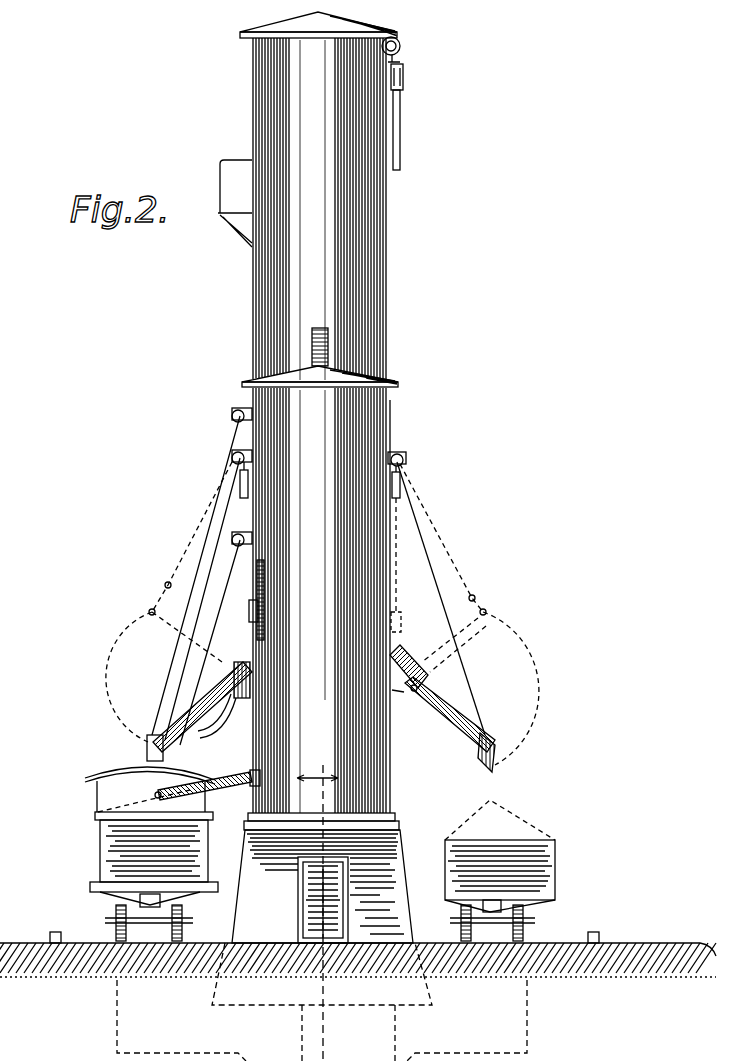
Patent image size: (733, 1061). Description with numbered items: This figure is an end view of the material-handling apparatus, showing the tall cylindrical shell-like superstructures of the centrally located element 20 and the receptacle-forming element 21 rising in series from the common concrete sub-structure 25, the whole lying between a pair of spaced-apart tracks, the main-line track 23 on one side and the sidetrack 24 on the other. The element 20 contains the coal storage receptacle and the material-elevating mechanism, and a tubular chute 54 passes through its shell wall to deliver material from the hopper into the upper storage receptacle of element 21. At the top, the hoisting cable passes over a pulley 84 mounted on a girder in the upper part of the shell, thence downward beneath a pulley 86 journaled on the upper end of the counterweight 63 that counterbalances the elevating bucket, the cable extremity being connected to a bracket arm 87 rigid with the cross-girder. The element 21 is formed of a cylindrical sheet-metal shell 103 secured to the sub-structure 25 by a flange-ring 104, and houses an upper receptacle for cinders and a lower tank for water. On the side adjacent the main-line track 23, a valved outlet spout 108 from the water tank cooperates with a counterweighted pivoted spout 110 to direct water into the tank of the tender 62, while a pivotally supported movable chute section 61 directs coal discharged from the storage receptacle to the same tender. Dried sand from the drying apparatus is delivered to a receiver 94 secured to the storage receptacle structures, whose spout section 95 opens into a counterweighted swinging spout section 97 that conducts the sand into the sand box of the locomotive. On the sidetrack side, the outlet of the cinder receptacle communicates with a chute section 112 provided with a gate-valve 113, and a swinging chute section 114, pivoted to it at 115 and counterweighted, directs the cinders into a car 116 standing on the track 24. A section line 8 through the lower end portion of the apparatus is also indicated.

The centrally located element 20 is at (307, 196).
The receptacle-forming element 21 is at (320, 589).
The tubular chute 54 is at (325, 348).
The pulley 84 is at (396, 40).
The bracket arm 87 is at (400, 62).
The pulley 86 is at (404, 72).
The counterweight 63 is at (401, 127).
The swinging spout section 97 is at (174, 700).
The receiver 94 is at (263, 572).
The spout section 95 is at (258, 600).
The movable chute section 61 is at (215, 714).
The pivoted spout 110 is at (218, 767).
The outlet spout 108 is at (240, 808).
The tender 62 is at (100, 829).
The track 23 is at (182, 943).
The flange-ring 104 is at (398, 820).
The sub-structure 25 is at (322, 886).
The section line 8 is at (317, 905).
The shell 103 is at (391, 748).
The swinging chute section 114 is at (475, 780).
The gate-valve 113 is at (400, 655).
The pivot 115 is at (417, 689).
The chute section 112 is at (398, 698).
The car 116 is at (540, 874).
The track 24 is at (525, 943).